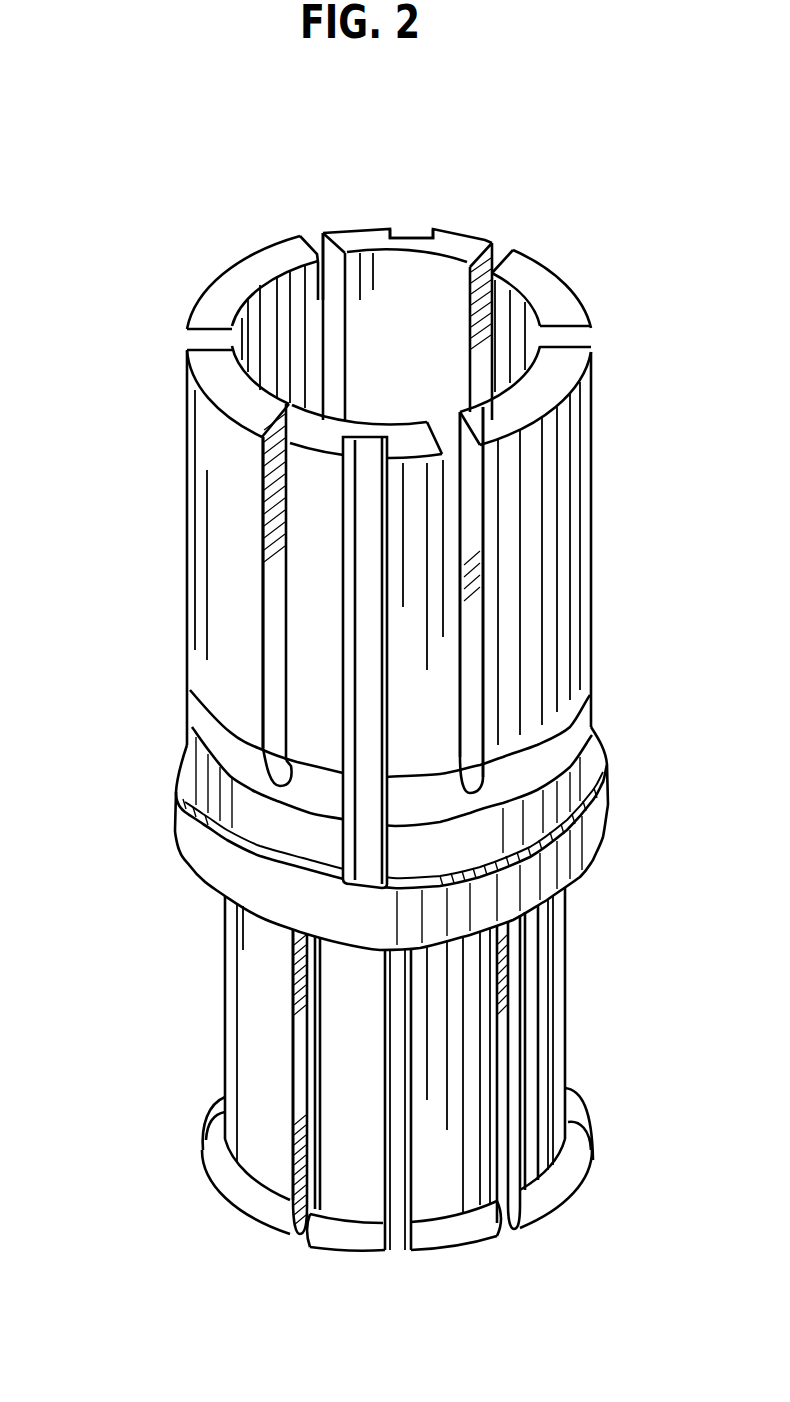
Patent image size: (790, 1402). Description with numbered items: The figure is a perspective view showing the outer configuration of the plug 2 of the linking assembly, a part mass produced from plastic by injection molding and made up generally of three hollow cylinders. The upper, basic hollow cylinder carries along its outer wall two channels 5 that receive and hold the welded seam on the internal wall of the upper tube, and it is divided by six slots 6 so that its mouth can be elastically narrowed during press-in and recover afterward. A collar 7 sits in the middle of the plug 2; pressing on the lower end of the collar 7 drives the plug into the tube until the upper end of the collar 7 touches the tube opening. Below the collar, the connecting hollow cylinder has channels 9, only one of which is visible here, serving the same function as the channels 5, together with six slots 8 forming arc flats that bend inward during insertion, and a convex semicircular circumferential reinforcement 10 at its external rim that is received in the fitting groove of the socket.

The plug 2 is at (203, 718).
The channels 5 is at (413, 232).
The slots 6 is at (318, 240).
The collar 7 is at (598, 833).
The slots 8 is at (303, 1233).
The channels 9 is at (398, 1243).
The convex semicircular circumferential reinforcement 10 is at (570, 1170).